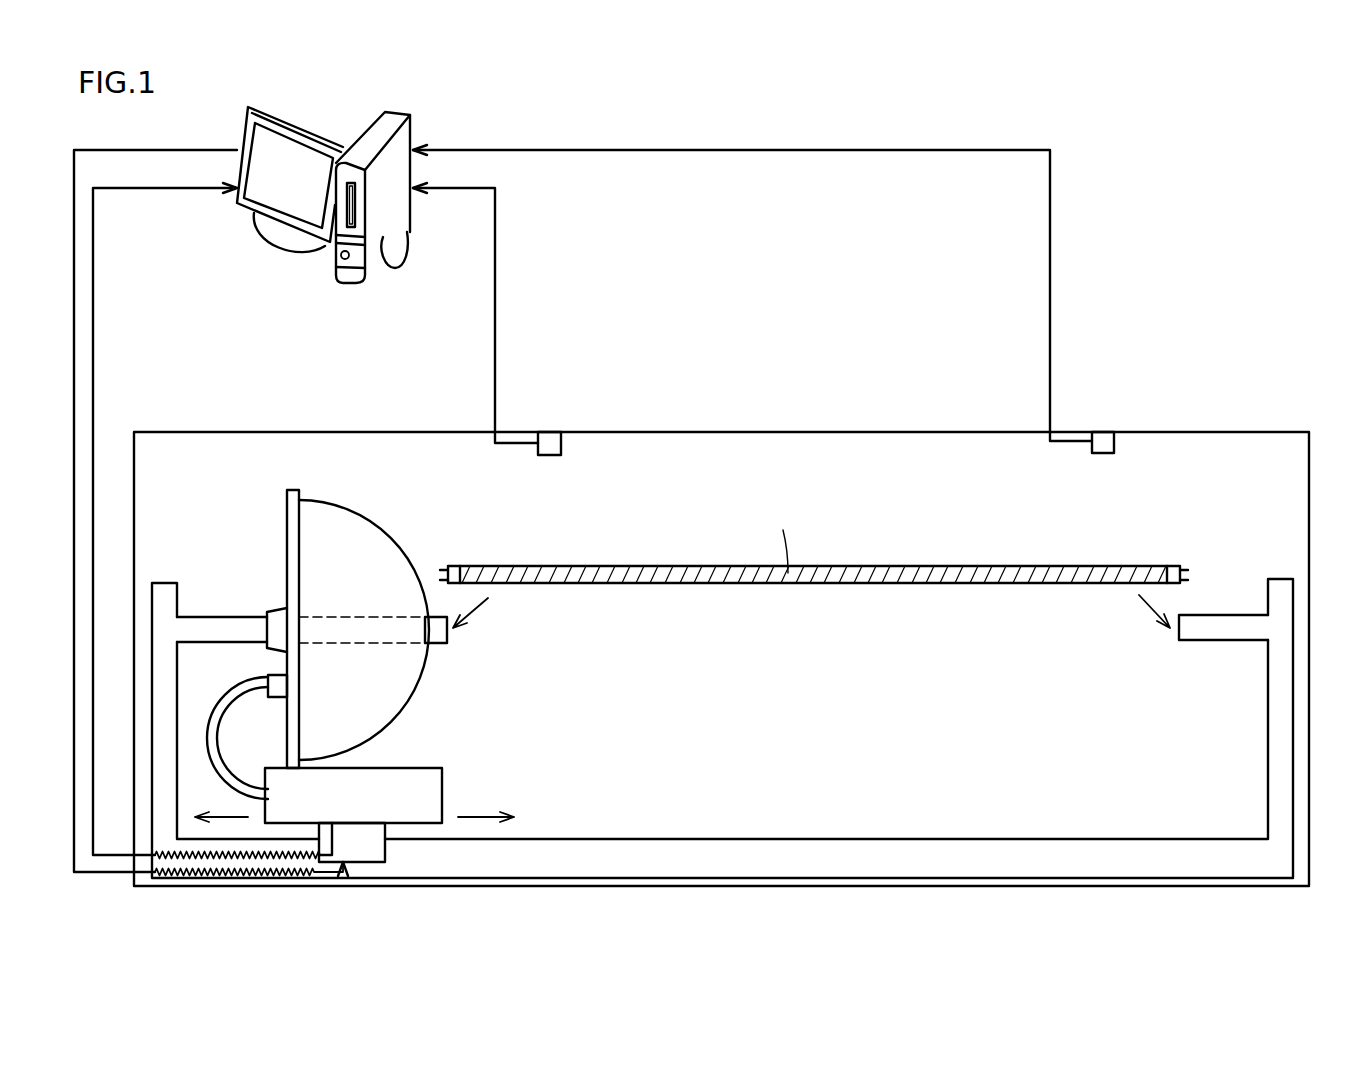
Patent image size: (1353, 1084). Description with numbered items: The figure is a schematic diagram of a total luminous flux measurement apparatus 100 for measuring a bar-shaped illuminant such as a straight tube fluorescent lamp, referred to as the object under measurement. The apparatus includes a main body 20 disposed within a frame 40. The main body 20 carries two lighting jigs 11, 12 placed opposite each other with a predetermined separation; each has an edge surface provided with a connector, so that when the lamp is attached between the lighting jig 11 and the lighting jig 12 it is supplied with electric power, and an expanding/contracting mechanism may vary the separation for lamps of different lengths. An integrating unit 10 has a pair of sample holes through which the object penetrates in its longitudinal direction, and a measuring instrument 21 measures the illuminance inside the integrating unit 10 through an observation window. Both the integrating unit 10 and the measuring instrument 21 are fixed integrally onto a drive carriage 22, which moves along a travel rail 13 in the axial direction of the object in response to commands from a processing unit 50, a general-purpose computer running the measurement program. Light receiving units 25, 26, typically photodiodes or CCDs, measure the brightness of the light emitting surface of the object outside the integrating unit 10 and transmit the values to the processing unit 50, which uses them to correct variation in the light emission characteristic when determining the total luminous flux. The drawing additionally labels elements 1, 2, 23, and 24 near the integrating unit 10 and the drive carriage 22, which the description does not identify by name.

The total luminous flux measurement apparatus 100 is at (1334, 127).
The processing unit 50 is at (393, 268).
The frame 40 is at (1262, 426).
The light receiving unit 25 is at (550, 442).
The light receiving unit 26 is at (1103, 430).
The main body 20 is at (889, 811).
The travel rail 13 is at (720, 858).
The measuring instrument 21 is at (408, 775).
The drive carriage 22 is at (365, 848).
The integrating unit 10 is at (372, 491).
The mounting plate 2 is at (290, 528).
The integrating sphere 1 is at (388, 553).
The lighting jig 11 is at (215, 625).
The lighting jig 12 is at (1216, 625).
The connector 24 is at (275, 675).
The optical fiber cable 23 is at (212, 753).